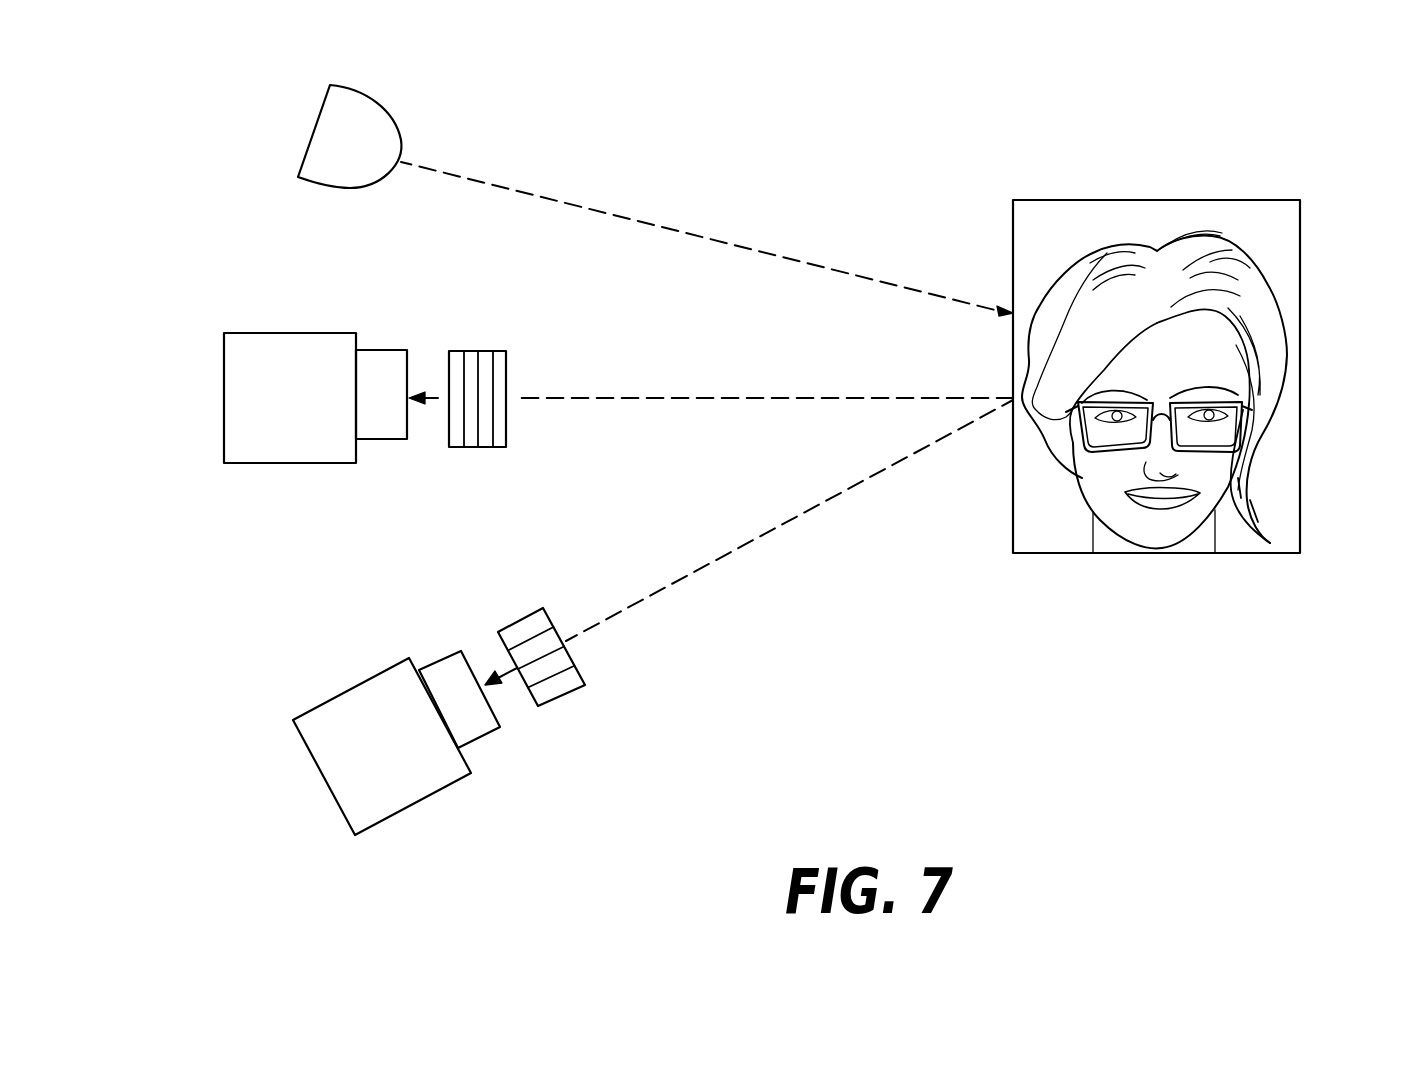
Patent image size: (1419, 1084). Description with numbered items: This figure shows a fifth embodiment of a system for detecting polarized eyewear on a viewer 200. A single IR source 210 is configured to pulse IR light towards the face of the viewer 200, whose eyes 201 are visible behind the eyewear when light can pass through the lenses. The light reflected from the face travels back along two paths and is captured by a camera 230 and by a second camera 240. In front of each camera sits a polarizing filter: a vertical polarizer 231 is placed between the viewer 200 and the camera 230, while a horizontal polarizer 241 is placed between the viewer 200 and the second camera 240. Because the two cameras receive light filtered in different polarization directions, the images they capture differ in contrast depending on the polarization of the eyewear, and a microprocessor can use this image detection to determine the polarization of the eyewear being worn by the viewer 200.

The viewer 200 is at (1210, 200).
The eyes 201 is at (1300, 415).
The IR source 210 is at (320, 124).
The camera 230 is at (224, 368).
The vertical polarizer 231 is at (507, 368).
The second camera 240 is at (308, 752).
The horizontal polarizer 241 is at (545, 609).